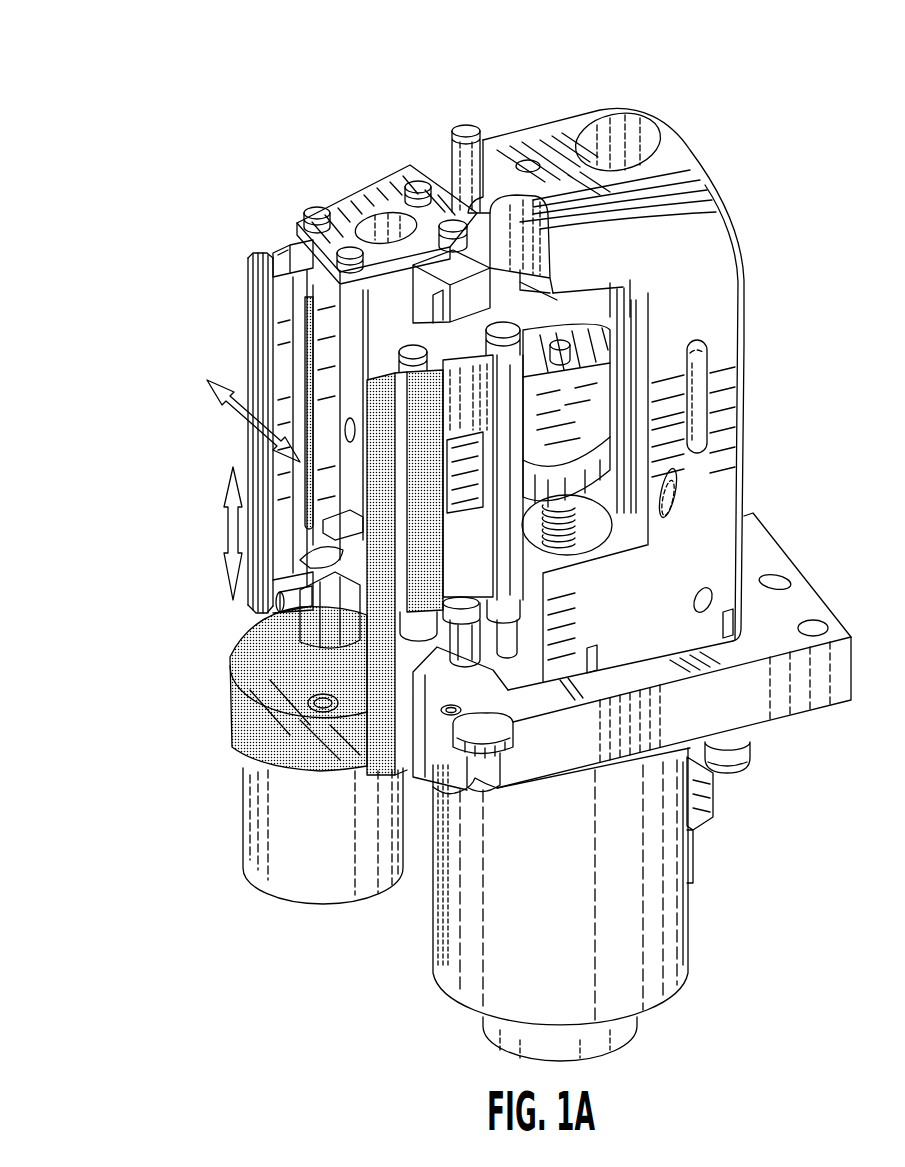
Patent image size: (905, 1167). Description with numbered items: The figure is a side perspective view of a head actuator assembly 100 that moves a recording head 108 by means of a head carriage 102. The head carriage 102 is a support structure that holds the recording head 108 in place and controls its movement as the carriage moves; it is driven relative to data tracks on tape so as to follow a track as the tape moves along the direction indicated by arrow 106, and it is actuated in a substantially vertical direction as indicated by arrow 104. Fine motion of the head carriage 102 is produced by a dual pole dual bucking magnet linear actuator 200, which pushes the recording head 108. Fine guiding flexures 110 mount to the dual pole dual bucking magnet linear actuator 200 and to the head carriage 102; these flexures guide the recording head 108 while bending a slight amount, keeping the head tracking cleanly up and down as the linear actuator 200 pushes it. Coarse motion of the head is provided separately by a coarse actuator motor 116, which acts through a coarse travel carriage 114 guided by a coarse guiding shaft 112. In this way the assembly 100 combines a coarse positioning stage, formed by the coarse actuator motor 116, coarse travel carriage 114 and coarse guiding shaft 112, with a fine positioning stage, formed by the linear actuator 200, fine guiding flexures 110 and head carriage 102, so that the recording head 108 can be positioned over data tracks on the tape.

The head actuator assembly 100 is at (111, 143).
The head carriage 102 is at (334, 606).
The arrow 104 is at (225, 534).
The arrow 106 is at (219, 409).
The recording head 108 is at (249, 324).
The fine guiding flexures 110 is at (351, 195).
The coarse guiding shaft 112 is at (466, 118).
The coarse travel carriage 114 is at (575, 400).
The coarse actuator motor 116 is at (647, 907).
The dual pole dual bucking magnet linear actuator 200 is at (289, 857).